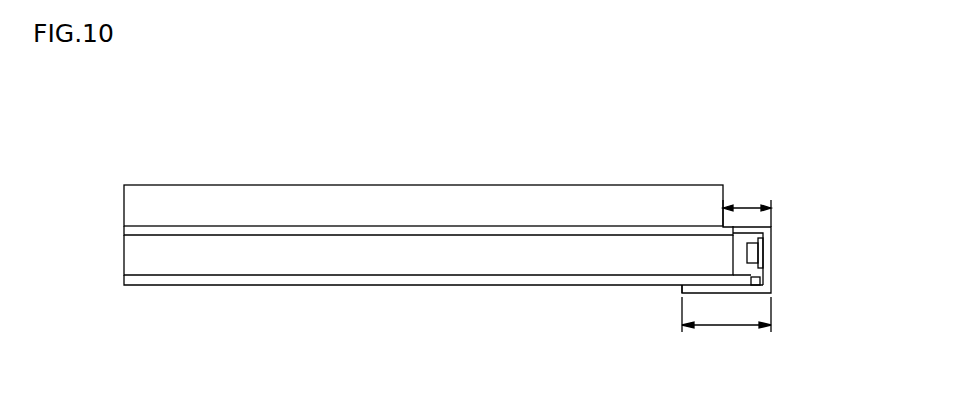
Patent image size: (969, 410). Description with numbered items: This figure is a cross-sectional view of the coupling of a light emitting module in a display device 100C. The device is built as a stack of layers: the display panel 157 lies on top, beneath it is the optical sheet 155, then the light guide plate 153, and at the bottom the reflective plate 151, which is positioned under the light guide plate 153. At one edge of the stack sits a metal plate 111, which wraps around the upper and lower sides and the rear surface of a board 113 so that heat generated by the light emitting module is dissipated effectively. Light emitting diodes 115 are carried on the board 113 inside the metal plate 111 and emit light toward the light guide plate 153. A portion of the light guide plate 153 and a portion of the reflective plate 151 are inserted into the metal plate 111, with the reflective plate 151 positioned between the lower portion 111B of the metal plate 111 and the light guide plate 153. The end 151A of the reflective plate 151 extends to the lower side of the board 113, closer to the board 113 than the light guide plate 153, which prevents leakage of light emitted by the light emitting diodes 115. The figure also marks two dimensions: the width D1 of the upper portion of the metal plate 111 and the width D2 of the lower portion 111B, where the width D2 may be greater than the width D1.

The display device 100C is at (183, 134).
The display panel 157 is at (125, 208).
The optical sheet 155 is at (126, 232).
The light guide plate 153 is at (128, 258).
The reflective plate 151 is at (128, 283).
The end of the reflective plate 151A is at (755, 281).
The metal plate 111 is at (772, 252).
The lower portion of the metal plate 111B is at (681, 288).
The board 113 is at (763, 238).
The light emitting diodes 115 is at (753, 258).
The width of the upper portion D1 is at (747, 203).
The width of the lower portion D2 is at (726, 325).